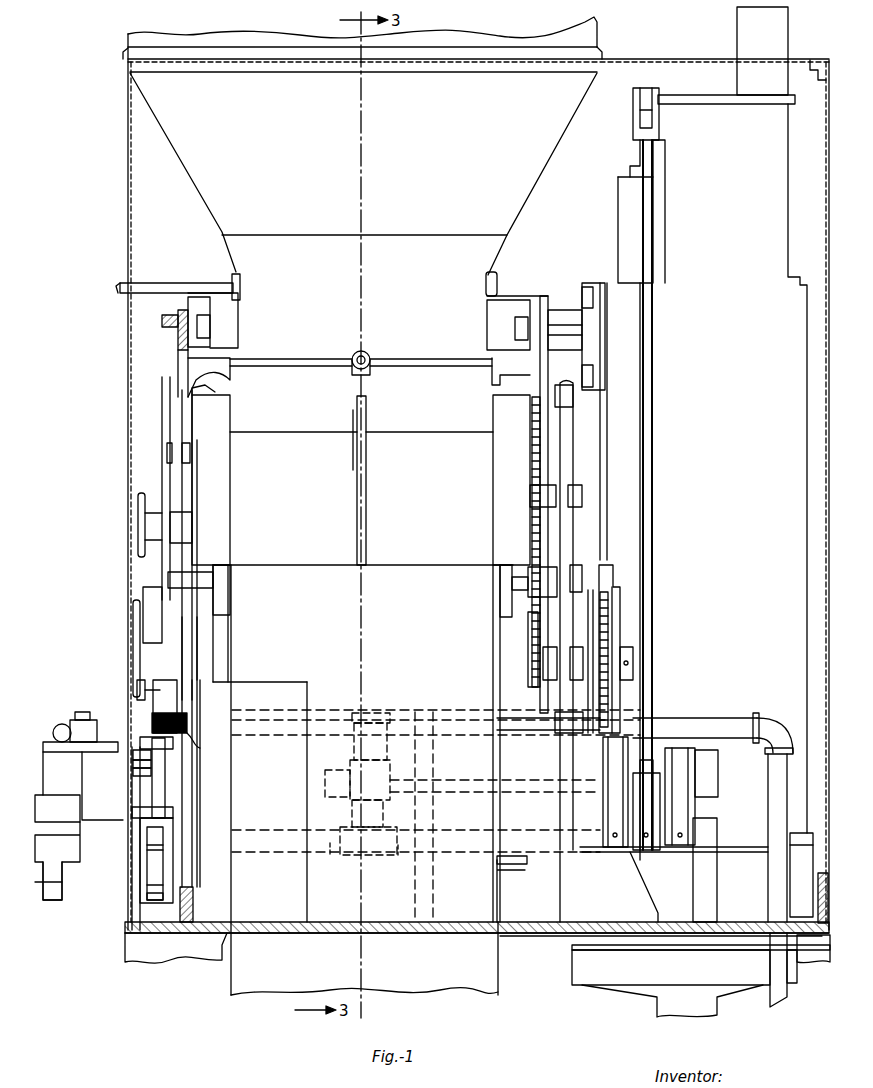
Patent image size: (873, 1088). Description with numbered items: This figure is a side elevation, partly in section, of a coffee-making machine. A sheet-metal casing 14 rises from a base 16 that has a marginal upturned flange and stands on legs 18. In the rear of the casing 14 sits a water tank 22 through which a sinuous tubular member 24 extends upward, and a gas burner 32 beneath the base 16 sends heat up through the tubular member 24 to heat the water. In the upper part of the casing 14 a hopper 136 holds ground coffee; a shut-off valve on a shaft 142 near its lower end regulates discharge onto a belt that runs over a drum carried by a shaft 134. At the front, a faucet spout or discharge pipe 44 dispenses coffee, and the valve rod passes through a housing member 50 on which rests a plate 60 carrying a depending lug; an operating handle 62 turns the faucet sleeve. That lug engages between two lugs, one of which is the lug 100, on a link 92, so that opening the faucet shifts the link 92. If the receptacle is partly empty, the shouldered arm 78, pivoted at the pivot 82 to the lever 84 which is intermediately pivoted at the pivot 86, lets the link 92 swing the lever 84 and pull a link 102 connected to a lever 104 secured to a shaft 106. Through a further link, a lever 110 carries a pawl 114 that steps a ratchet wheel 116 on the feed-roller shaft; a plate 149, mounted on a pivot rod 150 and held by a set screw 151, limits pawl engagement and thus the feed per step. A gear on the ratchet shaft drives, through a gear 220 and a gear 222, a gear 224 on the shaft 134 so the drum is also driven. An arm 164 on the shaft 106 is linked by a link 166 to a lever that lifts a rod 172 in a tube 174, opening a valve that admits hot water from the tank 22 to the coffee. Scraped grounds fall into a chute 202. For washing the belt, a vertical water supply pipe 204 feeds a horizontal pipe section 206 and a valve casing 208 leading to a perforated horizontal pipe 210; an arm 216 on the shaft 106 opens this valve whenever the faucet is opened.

The casing 14 is at (131, 229).
The base 16 is at (265, 933).
The legs 18 is at (185, 957).
The water tank 22 is at (780, 158).
The sinuous tubular member 24 is at (748, 36).
The gas burner 32 is at (583, 963).
The discharge pipe 44 is at (63, 886).
The housing member 50 is at (70, 805).
The plate 60 is at (105, 742).
The operating handle 62 is at (62, 725).
The arm 78 is at (140, 757).
The pivot 82 is at (143, 745).
The lever 84 is at (152, 780).
The pivot 86 is at (135, 813).
The link 92 is at (138, 773).
The lug 100 is at (140, 764).
The link 102 is at (147, 895).
The lever 104 is at (620, 842).
The shaft 106 is at (585, 848).
The lever 110 is at (618, 591).
The pawl 114 is at (606, 573).
The ratchet wheel 116 is at (606, 607).
The shaft 134 is at (140, 496).
The hopper 136 is at (200, 178).
The shaft 142 is at (162, 284).
The plate 149 is at (598, 630).
The pivot rod 150 is at (192, 740).
The set screw 151 is at (135, 688).
The arm 164 is at (652, 845).
The link 166 is at (652, 531).
The rod 172 is at (638, 150).
The tube 174 is at (626, 201).
The chute 202 is at (472, 950).
The vertical water supply pipe 204 is at (780, 1000).
The horizontal pipe section 206 is at (698, 720).
The valve casing 208 is at (378, 780).
The horizontal pipe 210 is at (405, 850).
The arm 216 is at (694, 806).
The gear 220 is at (533, 640).
The gear 222 is at (531, 475).
The gear 224 is at (531, 440).